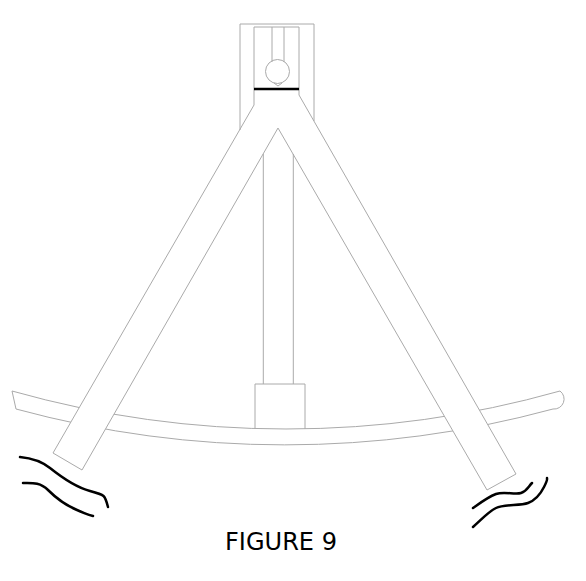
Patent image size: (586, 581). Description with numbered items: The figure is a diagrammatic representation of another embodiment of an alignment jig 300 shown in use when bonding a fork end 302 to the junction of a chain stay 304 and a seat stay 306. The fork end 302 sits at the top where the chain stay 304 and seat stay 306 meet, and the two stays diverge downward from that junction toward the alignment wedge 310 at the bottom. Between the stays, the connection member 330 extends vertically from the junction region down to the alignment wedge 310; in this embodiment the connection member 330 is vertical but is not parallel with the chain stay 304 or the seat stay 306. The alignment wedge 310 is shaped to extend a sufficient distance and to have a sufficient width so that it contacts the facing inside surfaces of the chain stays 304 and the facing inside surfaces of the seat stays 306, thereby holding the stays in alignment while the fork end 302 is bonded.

The alignment jig 300 is at (288, 275).
The fork end 302 is at (293, 58).
The chain stay 304 is at (197, 222).
The seat stay 306 is at (363, 247).
The alignment wedge 310 is at (370, 438).
The connection member 330 is at (280, 239).